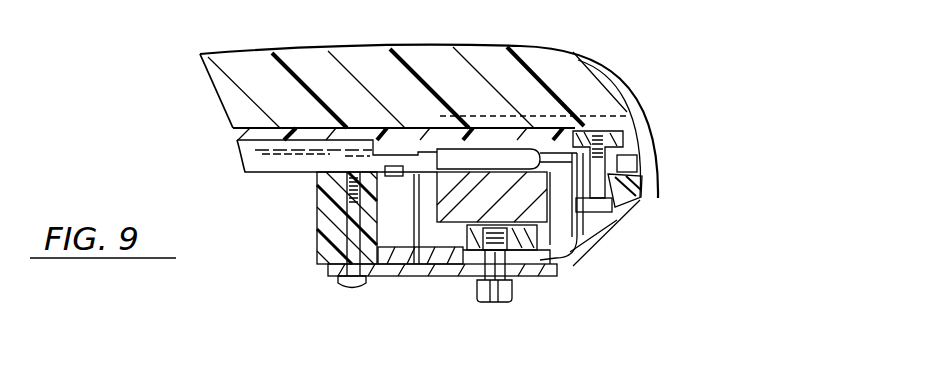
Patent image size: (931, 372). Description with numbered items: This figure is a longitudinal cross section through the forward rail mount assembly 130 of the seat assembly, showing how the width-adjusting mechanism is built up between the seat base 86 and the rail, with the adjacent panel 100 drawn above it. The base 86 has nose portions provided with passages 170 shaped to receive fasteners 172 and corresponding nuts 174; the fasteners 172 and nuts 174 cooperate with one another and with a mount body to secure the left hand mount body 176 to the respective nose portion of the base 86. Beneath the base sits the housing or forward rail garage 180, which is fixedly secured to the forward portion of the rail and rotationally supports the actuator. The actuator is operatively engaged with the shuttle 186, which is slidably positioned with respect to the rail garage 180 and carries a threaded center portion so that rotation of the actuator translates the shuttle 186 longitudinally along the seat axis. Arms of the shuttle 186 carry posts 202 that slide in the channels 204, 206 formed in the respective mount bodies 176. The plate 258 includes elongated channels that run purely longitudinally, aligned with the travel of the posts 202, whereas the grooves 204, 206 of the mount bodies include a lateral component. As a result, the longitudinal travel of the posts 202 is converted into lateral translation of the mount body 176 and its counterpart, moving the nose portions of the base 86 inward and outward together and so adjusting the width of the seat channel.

The panel 100 is at (600, 103).
The base 86 is at (622, 106).
The nut 174 is at (690, 118).
The forward rail mount assembly 130 is at (683, 127).
The passage 170 is at (637, 154).
The fastener 172 is at (638, 182).
The left hand mount body 176 is at (643, 203).
The forward rail garage 180 is at (492, 185).
The shuttle 186 is at (580, 233).
The plate 258 is at (558, 273).
The channel 204 is at (520, 262).
The post 202 is at (495, 302).
The channel 206 is at (457, 272).